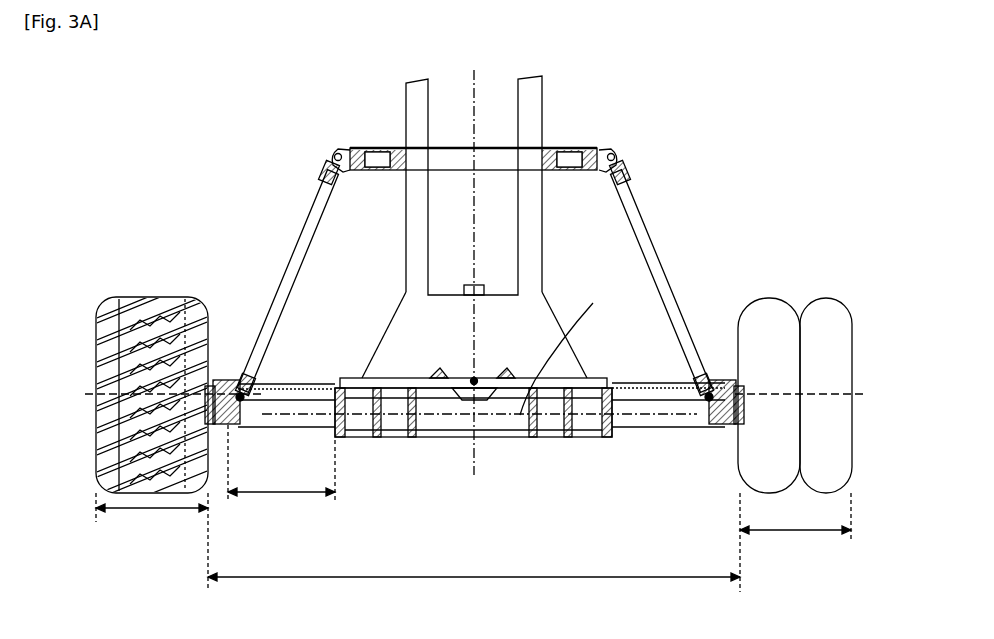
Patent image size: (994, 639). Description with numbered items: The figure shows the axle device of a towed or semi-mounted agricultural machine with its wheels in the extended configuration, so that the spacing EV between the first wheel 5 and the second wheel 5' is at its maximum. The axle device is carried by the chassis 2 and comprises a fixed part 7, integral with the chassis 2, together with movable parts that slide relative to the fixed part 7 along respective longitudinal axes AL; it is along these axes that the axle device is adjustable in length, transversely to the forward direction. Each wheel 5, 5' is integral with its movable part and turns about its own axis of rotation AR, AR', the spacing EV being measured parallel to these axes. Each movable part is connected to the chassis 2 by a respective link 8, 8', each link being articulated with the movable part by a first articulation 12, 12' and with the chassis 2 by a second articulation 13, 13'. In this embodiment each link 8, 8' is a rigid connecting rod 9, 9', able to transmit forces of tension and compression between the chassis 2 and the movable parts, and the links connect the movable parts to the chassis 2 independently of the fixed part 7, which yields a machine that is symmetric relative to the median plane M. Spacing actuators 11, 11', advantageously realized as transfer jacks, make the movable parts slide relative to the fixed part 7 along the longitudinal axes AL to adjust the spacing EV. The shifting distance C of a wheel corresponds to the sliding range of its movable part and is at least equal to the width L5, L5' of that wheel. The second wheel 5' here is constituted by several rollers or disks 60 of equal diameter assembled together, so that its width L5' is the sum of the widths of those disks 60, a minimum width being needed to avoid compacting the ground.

The chassis 2 is at (473, 227).
The wheel 5 is at (152, 384).
The wheel 5' is at (795, 361).
The fixed part 7 is at (456, 425).
The link 8 is at (266, 277).
The rigid connecting rod 9 is at (266, 277).
The link 8' is at (673, 277).
The rigid connecting rod 9' is at (673, 277).
The spacing actuator 11 is at (286, 354).
The spacing actuator 11' is at (668, 370).
The first articulation 12 is at (247, 428).
The first articulation 12' is at (698, 436).
The second articulation 13 is at (314, 130).
The second articulation 13' is at (633, 123).
The rollers or disks 60 is at (795, 395).
The longitudinal axis AL is at (564, 347).
The axis of rotation AR is at (70, 371).
The axis of rotation AR' is at (821, 376).
The median plane M is at (474, 462).
The width L5 is at (152, 541).
The width L5' is at (795, 550).
The shifting distance C is at (298, 492).
The spacing EV is at (540, 577).